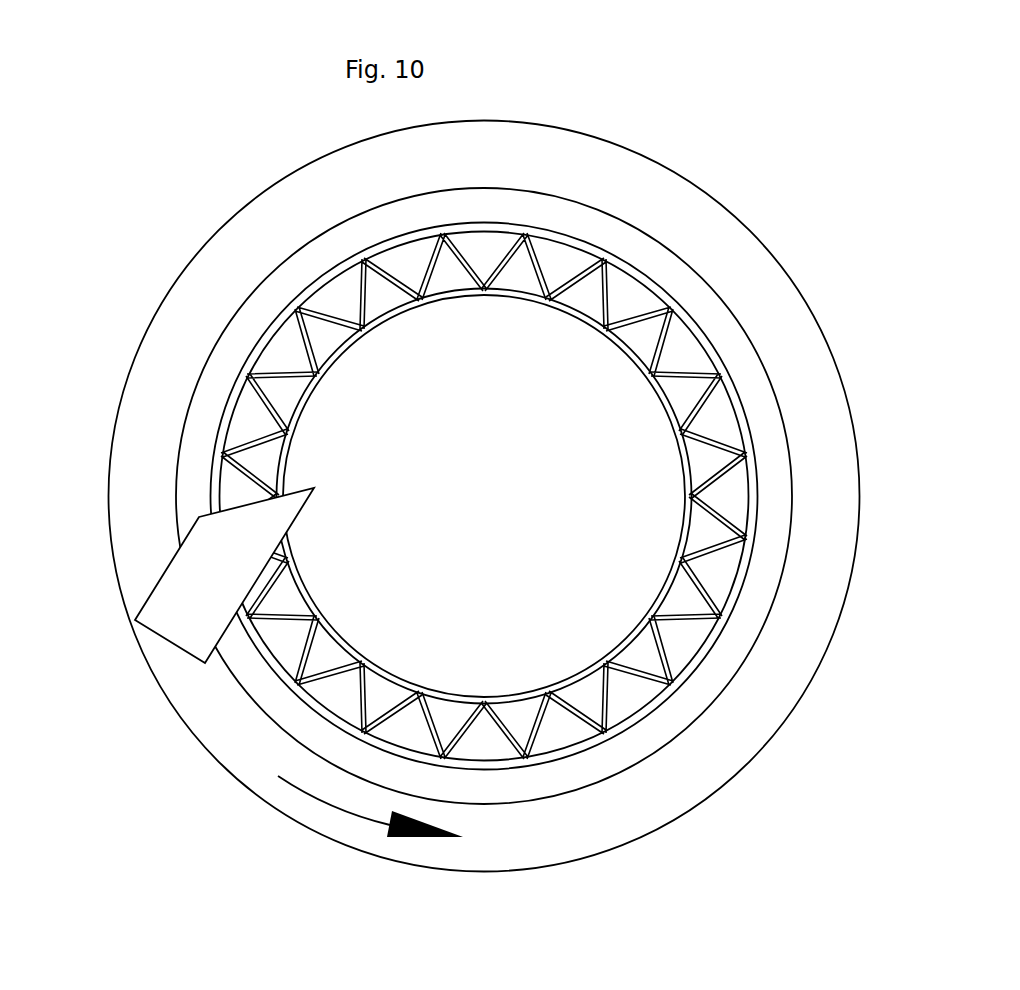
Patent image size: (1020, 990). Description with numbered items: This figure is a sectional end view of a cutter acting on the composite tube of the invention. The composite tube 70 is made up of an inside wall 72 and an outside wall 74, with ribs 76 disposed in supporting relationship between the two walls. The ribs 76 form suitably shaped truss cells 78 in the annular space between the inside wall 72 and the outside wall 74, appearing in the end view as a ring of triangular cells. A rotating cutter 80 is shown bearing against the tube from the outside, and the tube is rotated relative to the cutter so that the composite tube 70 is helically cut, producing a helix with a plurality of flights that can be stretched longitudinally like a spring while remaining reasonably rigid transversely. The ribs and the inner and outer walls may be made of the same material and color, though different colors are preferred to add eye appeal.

The composite tube 70 is at (484, 477).
The inside wall 72 is at (572, 312).
The outside wall 74 is at (497, 223).
The ribs 76 is at (685, 387).
The truss cells 78 is at (156, 327).
The rotating cutter 80 is at (167, 529).